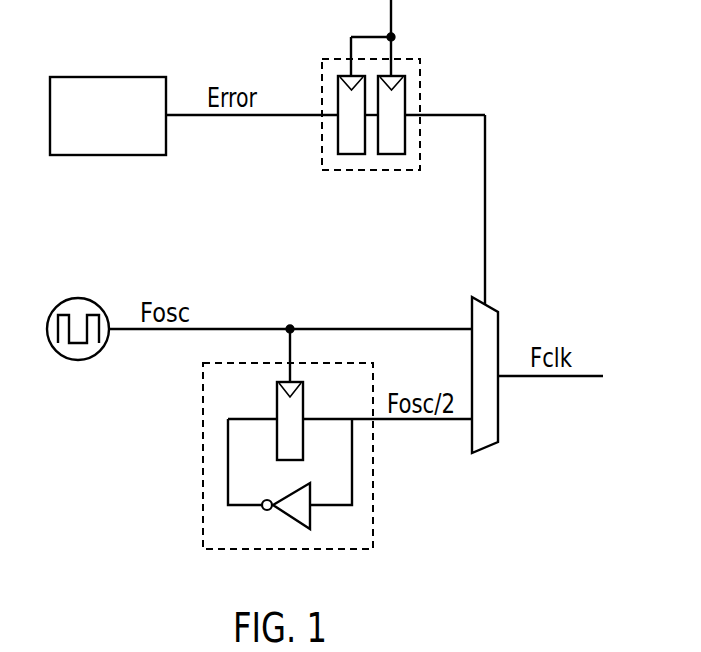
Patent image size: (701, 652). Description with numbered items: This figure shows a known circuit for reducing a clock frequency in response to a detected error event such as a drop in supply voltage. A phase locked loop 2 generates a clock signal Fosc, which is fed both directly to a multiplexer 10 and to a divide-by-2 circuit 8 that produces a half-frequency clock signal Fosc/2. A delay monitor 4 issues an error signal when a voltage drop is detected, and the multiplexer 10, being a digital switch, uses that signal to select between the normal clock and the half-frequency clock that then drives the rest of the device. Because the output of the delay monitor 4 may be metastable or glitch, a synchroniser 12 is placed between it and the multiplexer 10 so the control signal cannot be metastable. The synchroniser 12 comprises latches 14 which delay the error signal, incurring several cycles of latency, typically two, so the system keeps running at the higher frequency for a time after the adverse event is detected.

The phase locked loop 2 is at (47, 332).
The delay monitor 4 is at (108, 76).
The divide-by-2 circuit 8 is at (373, 490).
The multiplexer 10 is at (500, 402).
The synchroniser 12 is at (373, 103).
The latches 14 is at (340, 125).